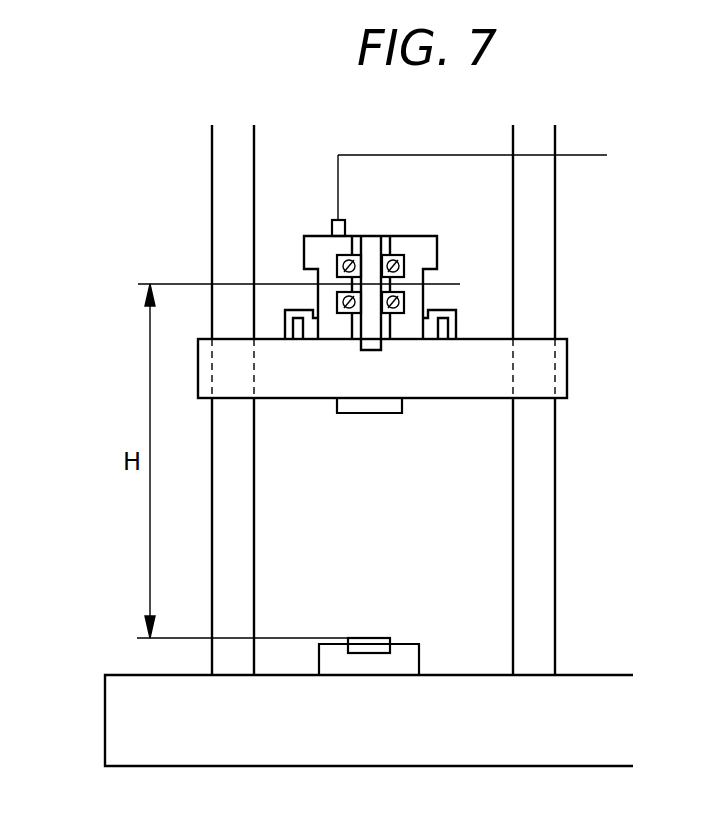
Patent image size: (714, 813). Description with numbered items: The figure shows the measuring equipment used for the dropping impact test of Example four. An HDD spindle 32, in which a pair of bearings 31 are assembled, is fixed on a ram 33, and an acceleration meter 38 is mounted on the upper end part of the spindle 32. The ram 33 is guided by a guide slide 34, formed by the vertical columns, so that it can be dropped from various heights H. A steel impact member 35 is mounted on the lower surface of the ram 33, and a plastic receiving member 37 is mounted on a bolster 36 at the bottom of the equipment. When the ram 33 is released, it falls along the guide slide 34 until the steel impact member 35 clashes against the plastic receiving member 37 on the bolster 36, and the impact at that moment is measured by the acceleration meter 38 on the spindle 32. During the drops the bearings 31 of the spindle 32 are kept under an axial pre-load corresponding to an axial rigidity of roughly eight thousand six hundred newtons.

The bearing 31 is at (407, 263).
The HDD spindle 32 is at (327, 247).
The ram 33 is at (300, 383).
The guide slide 34 is at (243, 555).
The steel impact member 35 is at (382, 402).
The bolster 36 is at (123, 698).
The plastic receiving member 37 is at (373, 643).
The acceleration meter 38 is at (347, 227).